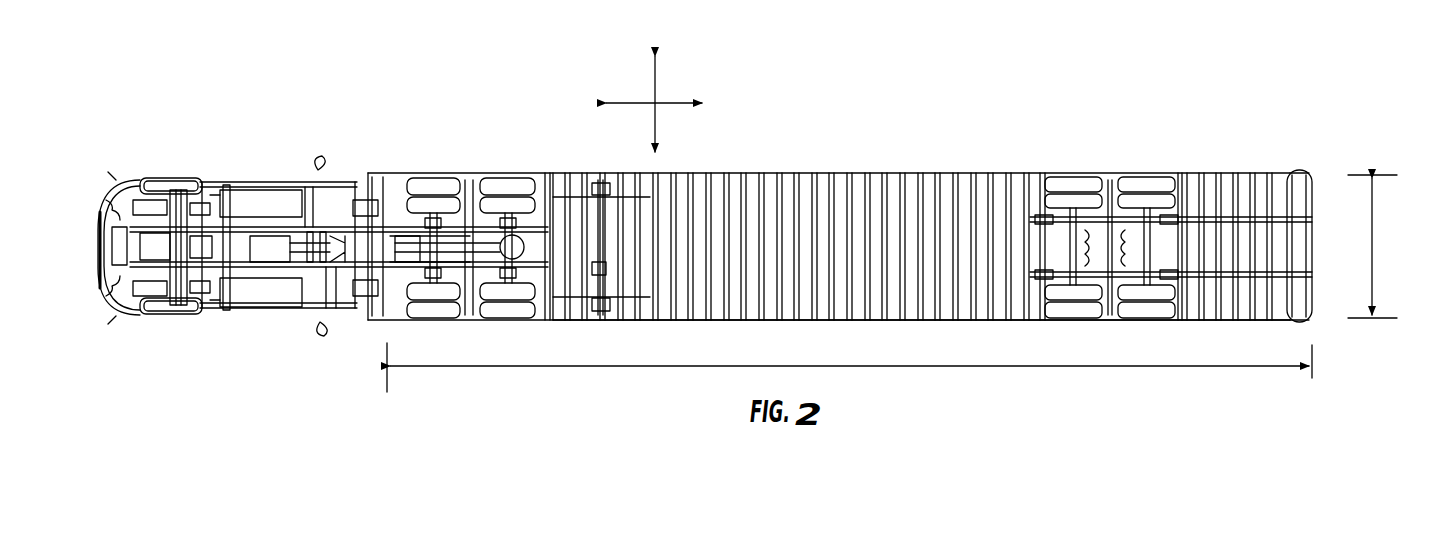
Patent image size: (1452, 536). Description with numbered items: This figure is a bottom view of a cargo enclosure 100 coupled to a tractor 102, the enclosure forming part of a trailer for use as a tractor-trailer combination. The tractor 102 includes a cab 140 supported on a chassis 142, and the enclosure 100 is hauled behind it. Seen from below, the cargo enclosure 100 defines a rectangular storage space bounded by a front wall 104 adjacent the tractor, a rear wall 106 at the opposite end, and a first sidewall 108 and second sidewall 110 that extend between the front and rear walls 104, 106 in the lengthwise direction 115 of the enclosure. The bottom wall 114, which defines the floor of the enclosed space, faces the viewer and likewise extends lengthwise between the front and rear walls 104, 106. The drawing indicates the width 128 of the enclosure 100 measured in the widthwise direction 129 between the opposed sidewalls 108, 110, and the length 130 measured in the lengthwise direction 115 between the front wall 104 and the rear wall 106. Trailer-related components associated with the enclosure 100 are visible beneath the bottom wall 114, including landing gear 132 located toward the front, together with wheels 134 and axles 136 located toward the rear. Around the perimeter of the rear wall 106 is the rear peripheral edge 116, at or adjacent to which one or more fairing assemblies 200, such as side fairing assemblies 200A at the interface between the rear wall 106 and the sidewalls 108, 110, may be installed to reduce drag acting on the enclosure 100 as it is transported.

The cargo enclosure 100 is at (1218, 172).
The tractor 102 is at (123, 180).
The front wall 104 is at (368, 184).
The rear wall 106 is at (1313, 217).
The first sidewall 108 is at (822, 175).
The second sidewall 110 is at (838, 323).
The bottom wall 114 is at (724, 178).
The lengthwise direction 115 is at (638, 103).
The rear peripheral edge 116 is at (1315, 178).
The width 128 is at (1375, 246).
The widthwise direction 129 is at (655, 88).
The length 130 is at (920, 368).
The landing gear 132 is at (600, 178).
The wheels 134 is at (1138, 183).
The axles 136 is at (1045, 222).
The cab 140 is at (470, 180).
The chassis 142 is at (253, 222).
The fairing assemblies 200 is at (1300, 173).
The side fairing assemblies 200A is at (1342, 248).